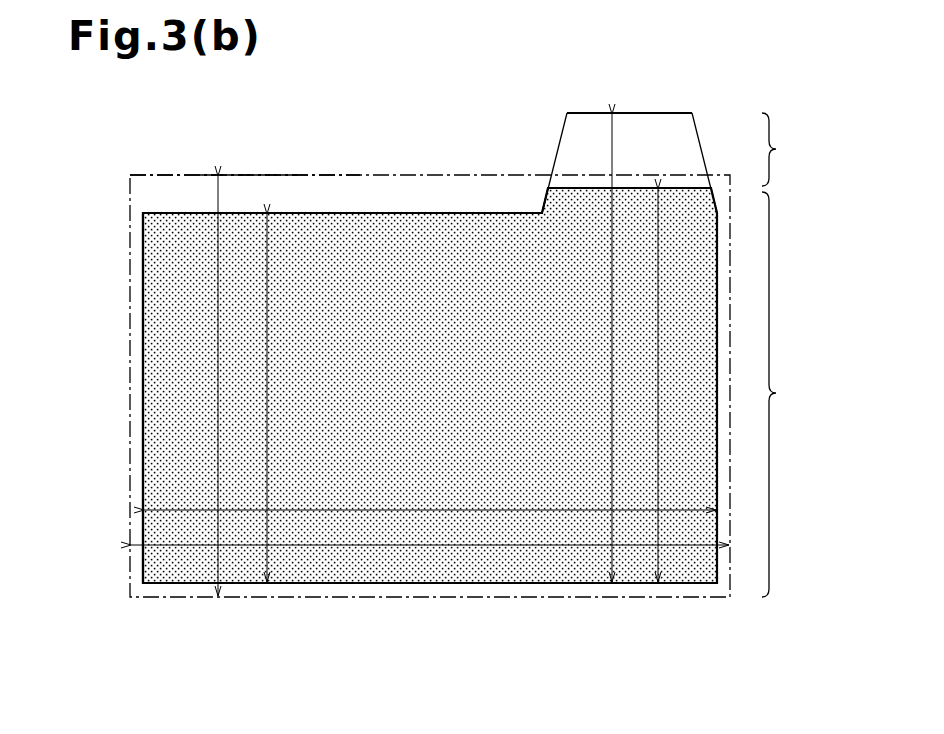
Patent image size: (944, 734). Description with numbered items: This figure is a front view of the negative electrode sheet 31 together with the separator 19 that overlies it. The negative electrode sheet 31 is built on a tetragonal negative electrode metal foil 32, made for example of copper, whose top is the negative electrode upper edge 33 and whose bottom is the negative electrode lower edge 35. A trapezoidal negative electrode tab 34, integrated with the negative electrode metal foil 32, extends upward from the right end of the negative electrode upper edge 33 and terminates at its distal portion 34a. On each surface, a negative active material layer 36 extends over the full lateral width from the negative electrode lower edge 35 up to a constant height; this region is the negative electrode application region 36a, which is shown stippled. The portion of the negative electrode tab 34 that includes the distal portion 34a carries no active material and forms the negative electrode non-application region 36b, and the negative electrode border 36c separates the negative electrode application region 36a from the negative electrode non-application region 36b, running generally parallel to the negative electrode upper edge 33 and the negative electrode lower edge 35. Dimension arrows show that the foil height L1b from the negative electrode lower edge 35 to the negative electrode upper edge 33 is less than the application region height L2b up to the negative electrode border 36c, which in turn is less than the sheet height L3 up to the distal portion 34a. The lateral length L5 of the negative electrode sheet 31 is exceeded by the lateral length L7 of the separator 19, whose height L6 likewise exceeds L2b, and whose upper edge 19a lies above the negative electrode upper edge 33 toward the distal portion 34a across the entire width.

The separator 19 is at (164, 174).
The upper edge of the separator 19a is at (239, 174).
The negative electrode sheet 31 is at (794, 118).
The negative electrode metal foil 32 is at (143, 402).
The negative electrode upper edge 33 is at (330, 213).
The negative electrode tab 34 is at (588, 124).
The distal portion 34a is at (661, 113).
The negative electrode lower edge 35 is at (433, 585).
The negative active material layer 36 is at (143, 318).
The negative electrode application region 36a is at (797, 394).
The negative electrode non-application region 36b is at (795, 149).
The negative electrode border 36c is at (569, 186).
The length of the separator in the perpendicular direction L6 is at (218, 362).
The length from the negative electrode lower edge to the negative electrode upper ed L1b is at (268, 362).
The length from the negative electrode lower edge to the distal portion L3 is at (612, 378).
The length from the negative electrode lower edge to the negative electrode border L2b is at (682, 334).
The length of the negative electrode sheet in the lateral direction L5 is at (430, 509).
The length of the separator in the lateral direction L7 is at (176, 546).